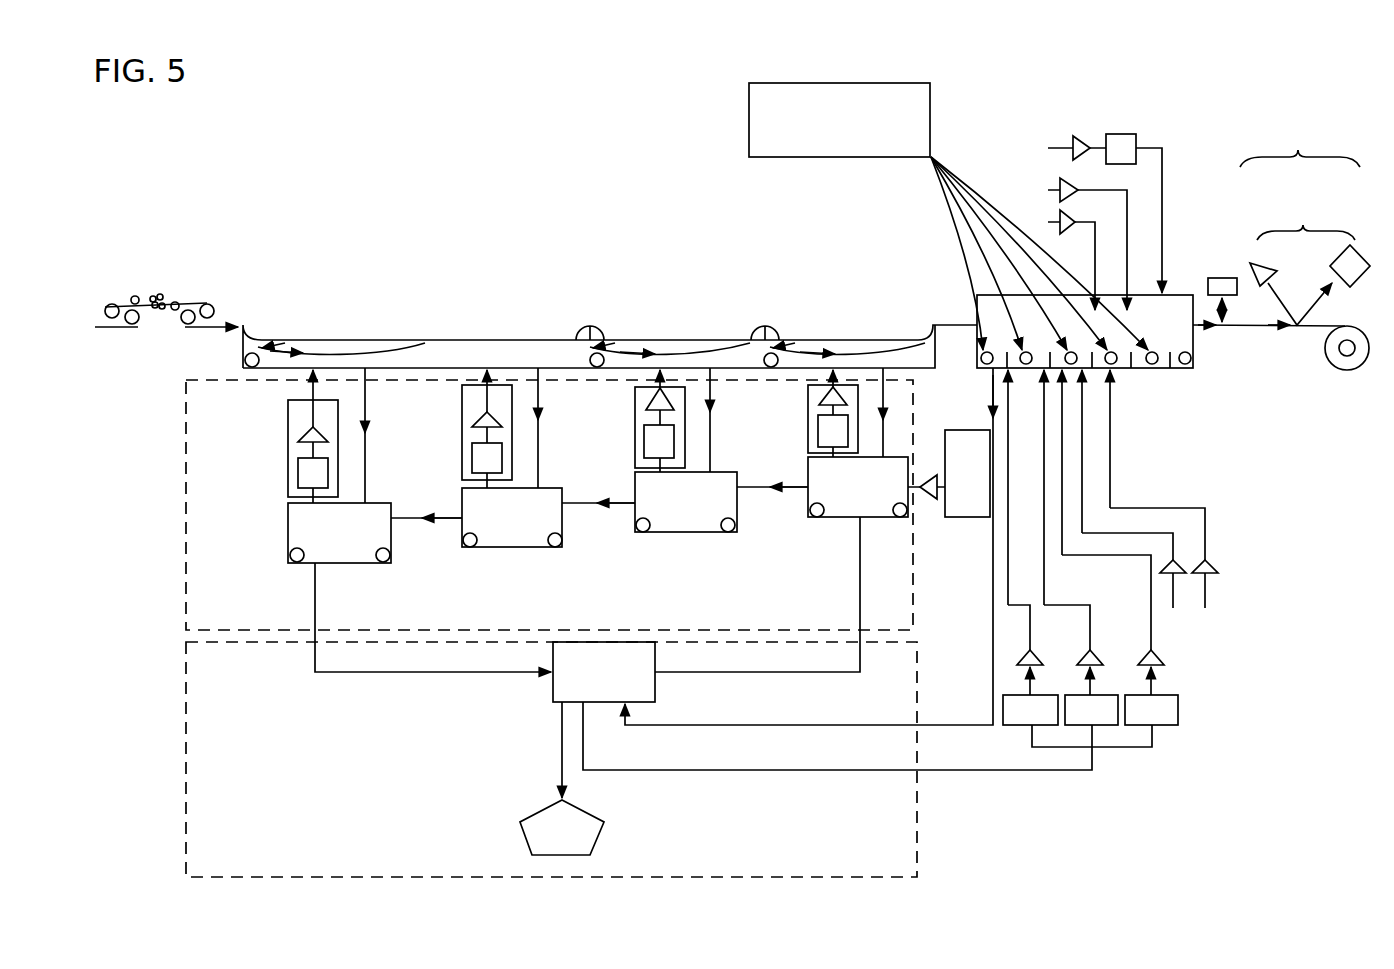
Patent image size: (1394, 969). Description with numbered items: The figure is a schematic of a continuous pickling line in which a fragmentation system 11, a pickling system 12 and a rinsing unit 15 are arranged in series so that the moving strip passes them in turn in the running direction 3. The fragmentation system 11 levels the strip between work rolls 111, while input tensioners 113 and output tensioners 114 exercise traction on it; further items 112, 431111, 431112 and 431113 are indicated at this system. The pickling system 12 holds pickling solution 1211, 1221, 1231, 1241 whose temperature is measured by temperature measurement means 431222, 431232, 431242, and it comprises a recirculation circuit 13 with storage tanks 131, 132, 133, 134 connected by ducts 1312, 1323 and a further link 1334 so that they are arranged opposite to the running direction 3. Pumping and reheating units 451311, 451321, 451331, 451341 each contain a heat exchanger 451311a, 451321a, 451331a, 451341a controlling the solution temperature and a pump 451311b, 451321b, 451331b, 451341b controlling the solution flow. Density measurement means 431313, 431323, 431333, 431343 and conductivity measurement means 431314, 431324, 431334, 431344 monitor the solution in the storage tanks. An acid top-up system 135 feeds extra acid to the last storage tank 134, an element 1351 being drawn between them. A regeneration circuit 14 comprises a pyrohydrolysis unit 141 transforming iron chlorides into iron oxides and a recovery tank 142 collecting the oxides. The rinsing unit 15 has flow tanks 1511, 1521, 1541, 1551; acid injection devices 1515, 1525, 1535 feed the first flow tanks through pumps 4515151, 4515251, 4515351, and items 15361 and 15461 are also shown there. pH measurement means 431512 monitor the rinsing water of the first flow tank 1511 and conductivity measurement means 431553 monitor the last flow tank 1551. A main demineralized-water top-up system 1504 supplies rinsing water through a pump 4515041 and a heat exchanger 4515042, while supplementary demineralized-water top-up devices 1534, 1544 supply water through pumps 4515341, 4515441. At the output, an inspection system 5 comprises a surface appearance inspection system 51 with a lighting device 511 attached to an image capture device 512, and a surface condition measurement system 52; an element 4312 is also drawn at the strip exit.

The fragmentation system 11 is at (175, 150).
The work rolls 111 is at (133, 290).
The lower feed roller 112 is at (152, 320).
The input tensioners 113 is at (112, 299).
The output tensioners 114 is at (190, 295).
The object stream at feeder 431111 is at (162, 290).
The singulated objects 431112 is at (217, 318).
The objects leaving feeder 431113 is at (211, 304).
The pickling system 12 is at (385, 186).
The pickling solution 1211 is at (377, 338).
The pickling solution 1221 is at (553, 338).
The pickling solution 1231 is at (725, 338).
The pickling solution 1241 is at (900, 338).
The temperature measurement means 431222 is at (441, 352).
The temperature measurement means 431232 is at (603, 352).
The temperature measurement means 431242 is at (770, 348).
The first flow tank 1511 is at (980, 368).
The recirculation circuit 13 is at (182, 540).
The regeneration circuit 14 is at (182, 742).
The pumping and reheating unit 451311 is at (322, 395).
The heat exchanger 451311a is at (298, 473).
The pump 451311b is at (300, 432).
The pumping and reheating unit 451321 is at (505, 440).
The heat exchanger 451321a is at (470, 455).
The pump 451321b is at (473, 398).
The pumping and reheating unit 451331 is at (680, 423).
The heat exchanger 451331a is at (643, 446).
The pump 451331b is at (645, 385).
The pumping and reheating unit 451341 is at (850, 410).
The heat exchanger 451341a is at (818, 440).
The pump 451341b is at (818, 385).
The storage tank 131 is at (419, 520).
The storage tank 132 is at (512, 457).
The storage tank 133 is at (686, 450).
The last storage tank 134 is at (781, 520).
The acid top-up system 135 is at (949, 473).
The controller output driver 1351 is at (936, 502).
The duct 1312 is at (426, 504).
The duct 1323 is at (598, 489).
The link between modules 134 and 133 1334 is at (772, 473).
The density measurement means 431313 is at (290, 557).
The conductivity measurement means 431314 is at (383, 564).
The density measurement means 431323 is at (470, 549).
The conductivity measurement means 431324 is at (556, 549).
The density measurement means 431333 is at (643, 534).
The conductivity measurement means 431334 is at (728, 534).
The density measurement means 431343 is at (816, 519).
The conductivity measurement means 431344 is at (900, 519).
The pyrohydrolysis unit 141 is at (822, 569).
The recovery tank 142 is at (562, 778).
The rinsing unit 15 is at (1177, 132).
The pH measurement means 431512 is at (916, 216).
The acid injection device 1515 is at (1066, 549).
The acid injection device 1525 is at (1069, 538).
The acid injection device 1535 is at (1120, 538).
The pump 4515151 is at (1020, 660).
The pump 4515251 is at (1088, 657).
The pump 4515351 is at (1157, 662).
The flow tank 1521 is at (1036, 378).
The third sorting actuator driver 15361 is at (1180, 575).
The fourth sorting actuator driver 15461 is at (1214, 575).
The fourth flow tank 1541 is at (1112, 376).
The last flow tank 1551 is at (1174, 376).
The conductivity measurement means 431553 is at (1192, 370).
The main demineralized-water top-up system 1504 is at (1081, 214).
The pump 4515041 is at (1068, 137).
The heat exchanger 4515042 is at (1128, 132).
The supplementary demineralized-water top-up device 1544 is at (1064, 244).
The pump 4515441 is at (1058, 178).
The supplementary demineralized-water top-up device 1534 is at (1048, 260).
The pump 4515341 is at (1076, 222).
The running direction 3 is at (1269, 340).
The conveyor pulley 4312 is at (1338, 357).
The surface condition measurement system 52 is at (1237, 301).
The inspection system 5 is at (1300, 145).
The surface appearance inspection system 51 is at (1306, 262).
The lighting device 511 is at (1257, 262).
The image capture device 512 is at (1358, 247).